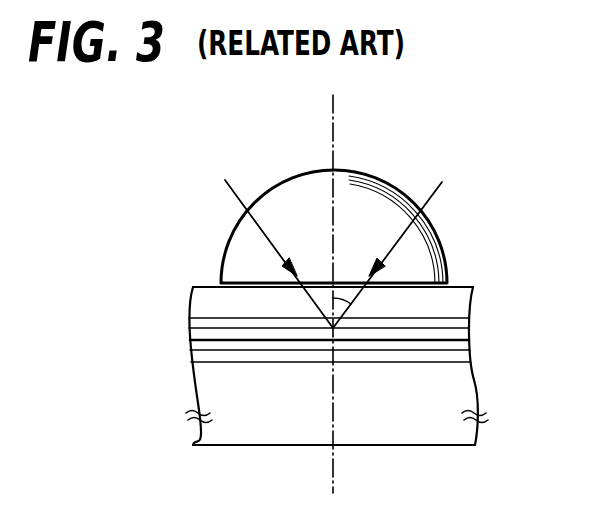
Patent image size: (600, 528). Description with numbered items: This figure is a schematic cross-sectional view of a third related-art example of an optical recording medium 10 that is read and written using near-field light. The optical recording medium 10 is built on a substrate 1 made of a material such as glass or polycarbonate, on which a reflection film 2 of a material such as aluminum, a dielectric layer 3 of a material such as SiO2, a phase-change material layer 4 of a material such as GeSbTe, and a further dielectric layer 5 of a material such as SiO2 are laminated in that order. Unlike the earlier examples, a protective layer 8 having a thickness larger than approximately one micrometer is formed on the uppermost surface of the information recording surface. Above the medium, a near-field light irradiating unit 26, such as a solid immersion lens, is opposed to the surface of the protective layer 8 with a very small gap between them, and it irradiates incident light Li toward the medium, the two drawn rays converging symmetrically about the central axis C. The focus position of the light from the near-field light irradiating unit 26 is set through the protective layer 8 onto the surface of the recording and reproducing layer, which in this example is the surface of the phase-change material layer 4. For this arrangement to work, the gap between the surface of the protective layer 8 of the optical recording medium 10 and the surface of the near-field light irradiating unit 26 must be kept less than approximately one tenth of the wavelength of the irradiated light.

The substrate 1 is at (460, 404).
The reflection film 2 is at (471, 360).
The dielectric layer 3 is at (471, 345).
The phase-change material layer 4 is at (471, 337).
The dielectric layer 5 is at (471, 323).
The protective layer 8 is at (466, 297).
The optical recording medium 10 is at (367, 370).
The near-field light irradiating unit 26 is at (452, 246).
The optical axis C is at (336, 117).
The incident light Li is at (440, 184).